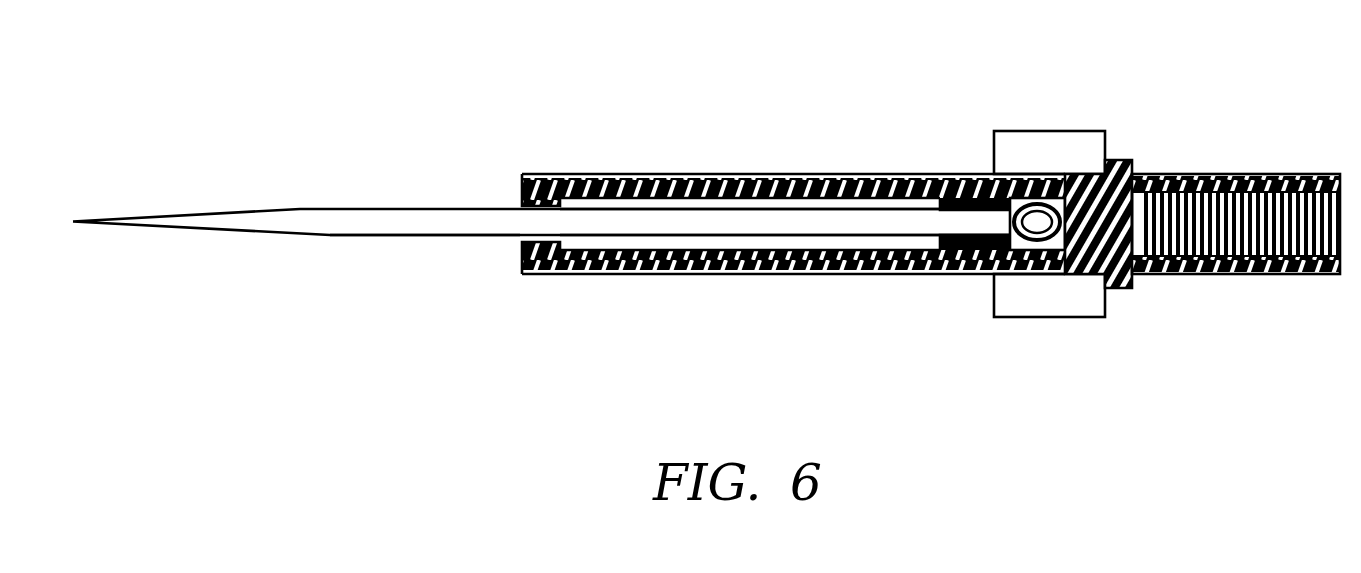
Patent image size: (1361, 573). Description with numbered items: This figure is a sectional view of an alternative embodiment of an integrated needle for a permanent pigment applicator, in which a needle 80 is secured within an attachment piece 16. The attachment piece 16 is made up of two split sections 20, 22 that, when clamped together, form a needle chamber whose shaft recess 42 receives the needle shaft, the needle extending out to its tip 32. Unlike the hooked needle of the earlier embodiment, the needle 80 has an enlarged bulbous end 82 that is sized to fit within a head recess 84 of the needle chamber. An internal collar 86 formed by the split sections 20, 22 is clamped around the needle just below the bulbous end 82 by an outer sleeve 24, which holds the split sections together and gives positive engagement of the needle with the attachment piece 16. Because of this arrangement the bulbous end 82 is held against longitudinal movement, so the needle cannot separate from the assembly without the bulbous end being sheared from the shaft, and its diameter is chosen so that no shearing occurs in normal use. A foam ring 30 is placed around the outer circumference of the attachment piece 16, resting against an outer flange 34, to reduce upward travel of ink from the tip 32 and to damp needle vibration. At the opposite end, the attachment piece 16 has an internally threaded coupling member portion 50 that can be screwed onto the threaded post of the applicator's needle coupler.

The attachment piece 16 is at (811, 179).
The split section 20 is at (522, 198).
The split section 22 is at (522, 248).
The outer sleeve 24 is at (600, 174).
The foam ring 30 is at (1031, 131).
The tip 32 is at (168, 232).
The outer flange 34 is at (1118, 290).
The shaft recess 42 is at (678, 244).
The coupling member portion 50 is at (1248, 276).
The needle 80 is at (397, 243).
The bulbous end 82 is at (1013, 240).
The head recess 84 is at (1070, 180).
The internal collar 86 is at (957, 180).